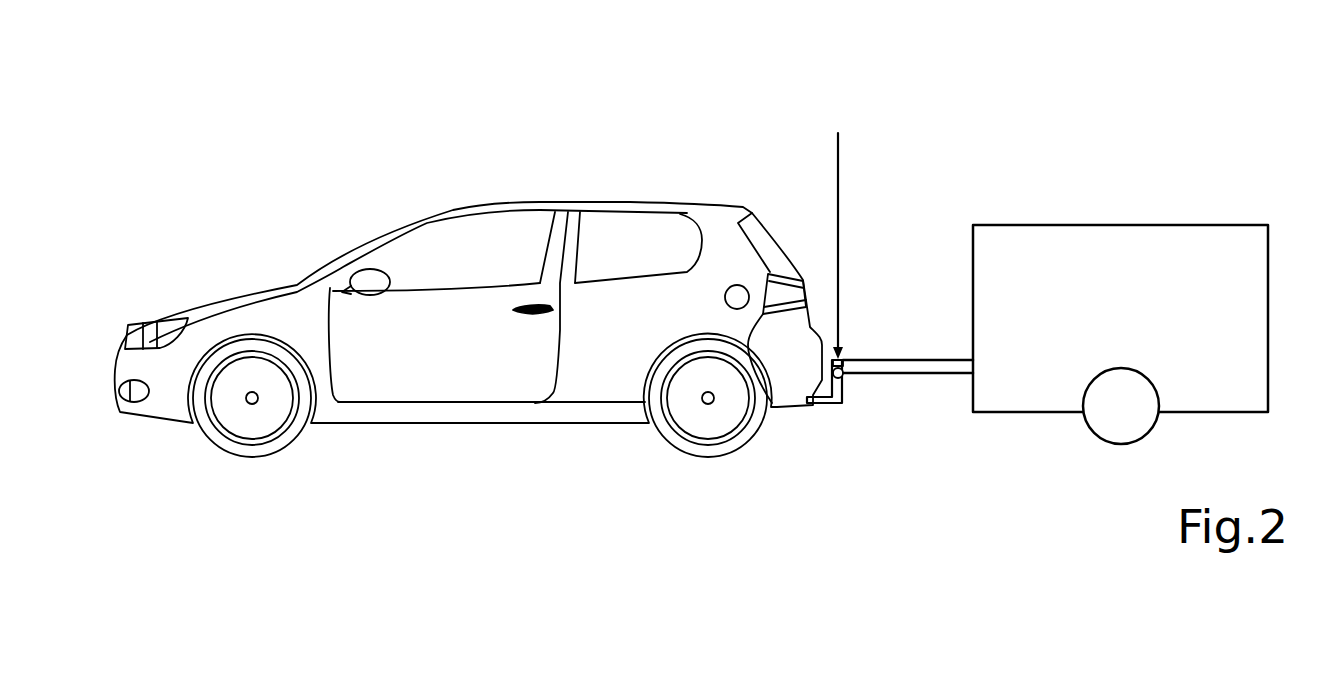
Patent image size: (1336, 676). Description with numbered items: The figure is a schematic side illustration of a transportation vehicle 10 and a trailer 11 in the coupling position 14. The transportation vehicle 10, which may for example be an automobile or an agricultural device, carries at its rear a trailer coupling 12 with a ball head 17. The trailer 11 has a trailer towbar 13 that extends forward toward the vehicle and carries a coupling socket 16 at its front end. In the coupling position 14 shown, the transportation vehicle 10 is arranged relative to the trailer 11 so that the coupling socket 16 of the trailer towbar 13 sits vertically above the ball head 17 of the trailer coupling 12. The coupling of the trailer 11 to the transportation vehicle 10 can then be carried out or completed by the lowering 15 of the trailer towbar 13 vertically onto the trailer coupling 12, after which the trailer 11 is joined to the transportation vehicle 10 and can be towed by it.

The transportation vehicle 10 is at (628, 205).
The trailer 11 is at (1070, 225).
The trailer coupling 12 is at (836, 404).
The trailer towbar 13 is at (895, 358).
The coupling position 14 is at (444, 131).
The lowering 15 is at (840, 160).
The coupling socket 16 is at (845, 358).
The ball head 17 is at (848, 378).